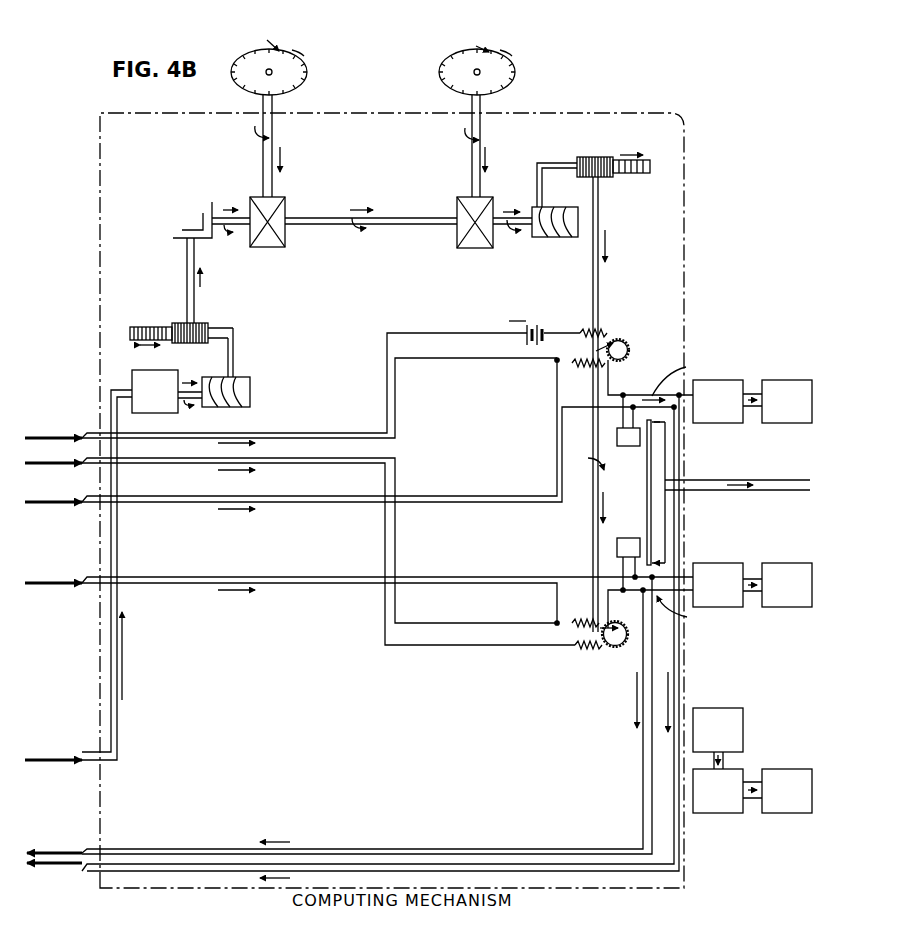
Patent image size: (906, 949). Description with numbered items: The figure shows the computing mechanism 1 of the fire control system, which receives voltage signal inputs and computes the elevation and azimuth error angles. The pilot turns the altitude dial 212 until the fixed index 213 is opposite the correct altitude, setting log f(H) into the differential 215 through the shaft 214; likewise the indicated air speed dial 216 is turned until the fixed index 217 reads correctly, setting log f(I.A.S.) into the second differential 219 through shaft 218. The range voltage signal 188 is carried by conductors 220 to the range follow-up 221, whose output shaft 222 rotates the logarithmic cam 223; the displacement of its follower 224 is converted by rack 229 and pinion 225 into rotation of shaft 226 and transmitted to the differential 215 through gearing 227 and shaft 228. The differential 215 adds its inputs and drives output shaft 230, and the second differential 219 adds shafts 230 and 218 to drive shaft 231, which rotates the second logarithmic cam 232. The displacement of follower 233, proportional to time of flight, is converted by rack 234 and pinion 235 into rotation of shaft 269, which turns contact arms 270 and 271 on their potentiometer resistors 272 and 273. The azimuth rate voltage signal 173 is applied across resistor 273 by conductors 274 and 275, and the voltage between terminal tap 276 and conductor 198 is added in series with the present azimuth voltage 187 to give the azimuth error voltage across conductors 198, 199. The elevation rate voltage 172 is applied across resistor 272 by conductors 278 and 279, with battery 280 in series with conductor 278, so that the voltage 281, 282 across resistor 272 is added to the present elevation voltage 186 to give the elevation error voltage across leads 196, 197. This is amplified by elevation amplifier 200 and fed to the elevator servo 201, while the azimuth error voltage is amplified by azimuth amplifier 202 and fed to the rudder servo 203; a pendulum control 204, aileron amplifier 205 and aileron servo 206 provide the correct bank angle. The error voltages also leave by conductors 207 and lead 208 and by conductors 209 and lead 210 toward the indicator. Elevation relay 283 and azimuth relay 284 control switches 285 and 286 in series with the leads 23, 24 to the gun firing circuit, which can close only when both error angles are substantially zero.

The computing mechanism 1 is at (652, 114).
The lead to gun firing circuit 23 is at (716, 478).
The lead to gun firing circuit 24 is at (783, 478).
The elevation rate voltage signal 172 is at (68, 437).
The azimuth rate voltage signal 173 is at (72, 456).
The present elevation voltage 186 is at (64, 500).
The present azimuth voltage 187 is at (64, 582).
The range voltage signal 188 is at (64, 756).
The conductor 196 is at (609, 382).
The conductor 197 is at (588, 406).
The conductor 198 is at (612, 590).
The conductor 199 is at (587, 578).
The elevation amplifier 200 is at (731, 426).
The elevator servo 201 is at (794, 426).
The azimuth amplifier 202 is at (737, 560).
The rudder servo 203 is at (795, 560).
The pendulum control 204 is at (705, 706).
The aileron amplifier 205 is at (732, 814).
The aileron servo 206 is at (798, 814).
The conductors 207 is at (446, 871).
The lead 208 is at (28, 868).
The conductors 209 is at (418, 850).
The lead 210 is at (25, 853).
The altitude dial 212 is at (299, 81).
The fixed index 213 is at (276, 46).
The shaft 214 is at (273, 128).
The differential 215 is at (286, 212).
The indicated air speed dial 216 is at (507, 82).
The fixed index 217 is at (490, 47).
The shaft 218 is at (480, 129).
The second differential 219 is at (457, 208).
The conductors 220 is at (118, 690).
The range follow-up 221 is at (193, 373).
The output shaft 222 is at (187, 405).
The logarithmic cam 223 is at (250, 385).
The follower 224 is at (234, 350).
The pinion 225 is at (207, 325).
The shaft 226 is at (187, 272).
The gearing 227 is at (204, 226).
The shaft 228 is at (241, 225).
The rack 229 is at (150, 326).
The output shaft 230 is at (391, 226).
The output shaft 231 is at (527, 200).
The second logarithmic cam 232 is at (560, 239).
The follower 233 is at (543, 194).
The rack 234 is at (657, 150).
The pinion 235 is at (598, 156).
The shaft 269 is at (600, 209).
The contact arm 270 is at (611, 339).
The contact arm 271 is at (606, 648).
The elevation potentiometer resistor 272 is at (626, 352).
The azimuth potentiometer resistor 273 is at (591, 652).
The conductor 274 is at (326, 458).
The conductor 275 is at (330, 465).
The terminal tap 276 is at (557, 623).
The conductor 278 is at (311, 433).
The conductor 279 is at (314, 441).
The battery 280 is at (522, 345).
The voltage terminal 281 is at (556, 365).
The voltage terminal 282 is at (573, 333).
The elevation relay 283 is at (617, 437).
The azimuth relay 284 is at (611, 550).
The switch 285 is at (645, 450).
The switch 286 is at (646, 525).